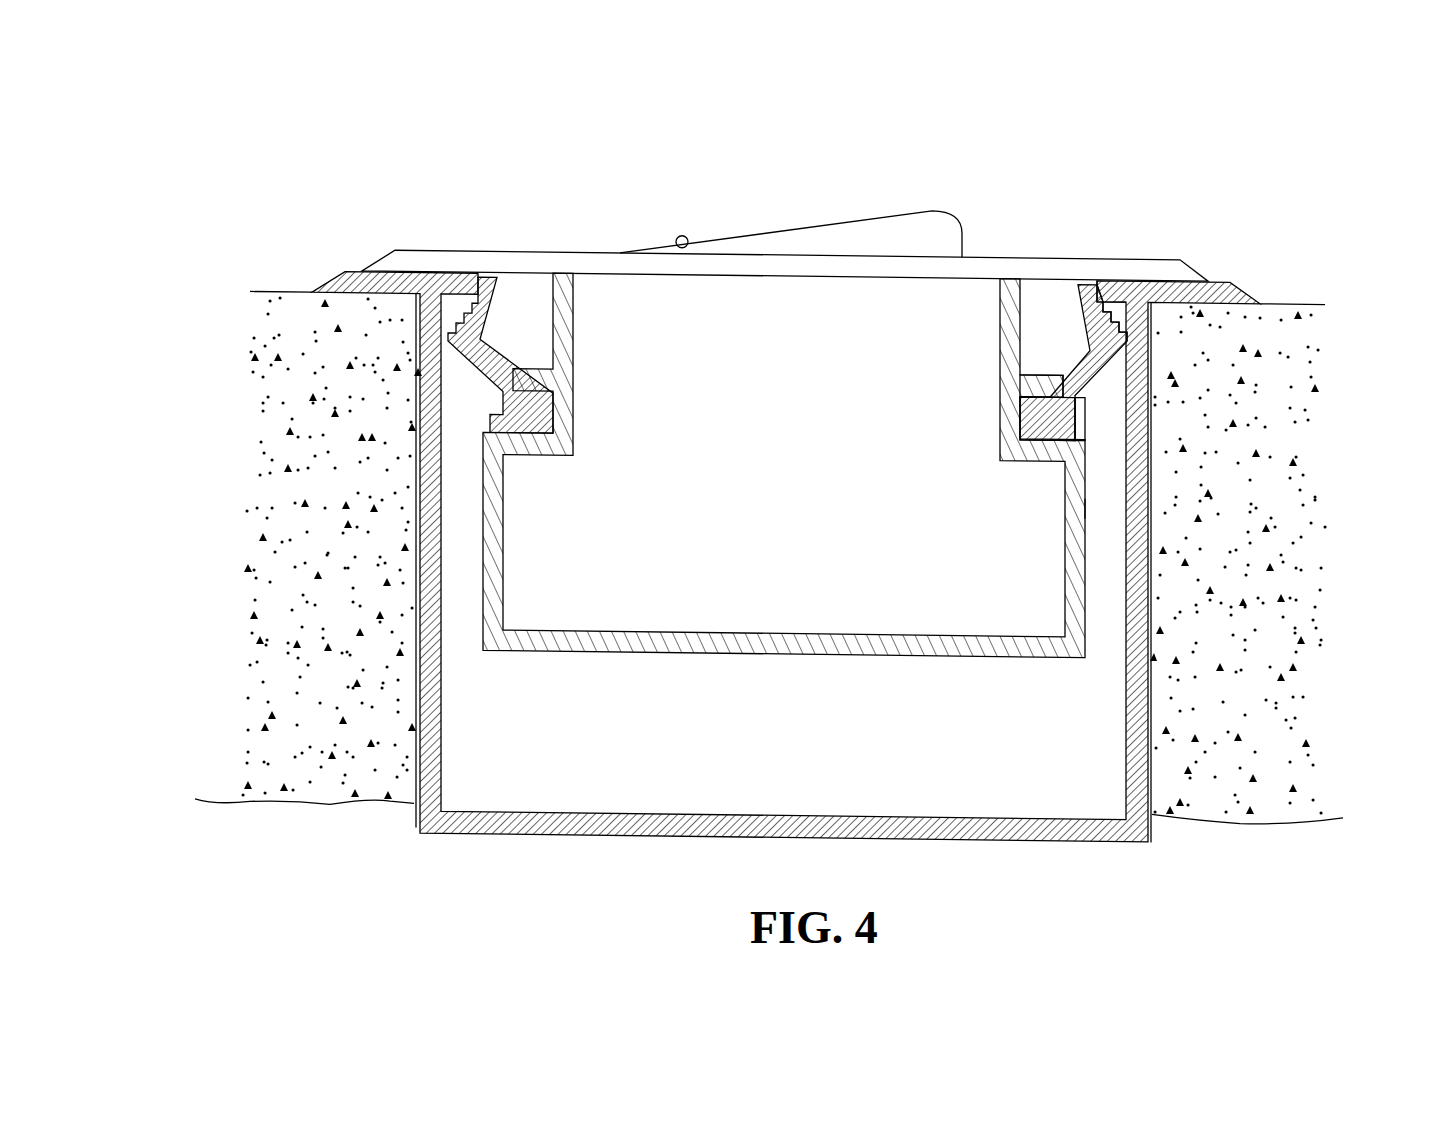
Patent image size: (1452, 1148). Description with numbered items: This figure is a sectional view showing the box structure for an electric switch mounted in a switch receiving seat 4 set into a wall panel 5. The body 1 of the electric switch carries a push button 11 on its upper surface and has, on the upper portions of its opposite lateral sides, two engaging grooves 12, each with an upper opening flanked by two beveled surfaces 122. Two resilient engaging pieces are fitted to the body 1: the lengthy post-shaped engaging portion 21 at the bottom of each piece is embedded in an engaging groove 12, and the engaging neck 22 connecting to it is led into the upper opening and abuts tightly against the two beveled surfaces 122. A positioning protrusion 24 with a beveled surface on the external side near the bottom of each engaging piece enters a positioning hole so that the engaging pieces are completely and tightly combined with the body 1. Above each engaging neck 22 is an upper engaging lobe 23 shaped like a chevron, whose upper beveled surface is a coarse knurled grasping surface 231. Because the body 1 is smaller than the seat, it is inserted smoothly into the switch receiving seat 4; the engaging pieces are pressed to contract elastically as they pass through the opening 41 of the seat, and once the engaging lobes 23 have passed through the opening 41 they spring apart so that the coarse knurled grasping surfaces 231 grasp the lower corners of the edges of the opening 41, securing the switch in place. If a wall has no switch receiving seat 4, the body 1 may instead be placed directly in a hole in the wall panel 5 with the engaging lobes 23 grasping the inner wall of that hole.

The body 1 is at (990, 228).
The push button 11 is at (840, 243).
The engaging groove 12 is at (997, 417).
The beveled surface 122 is at (1055, 373).
The engaging portion 21 is at (1080, 425).
The engaging neck 22 is at (1067, 404).
The engaging lobe 23 is at (1112, 352).
The coarse knurled grasping surface 231 is at (1178, 262).
The positioning protrusion 24 is at (1088, 508).
The switch receiving seat 4 is at (1083, 838).
The opening 41 is at (1100, 288).
The wall panel 5 is at (325, 317).